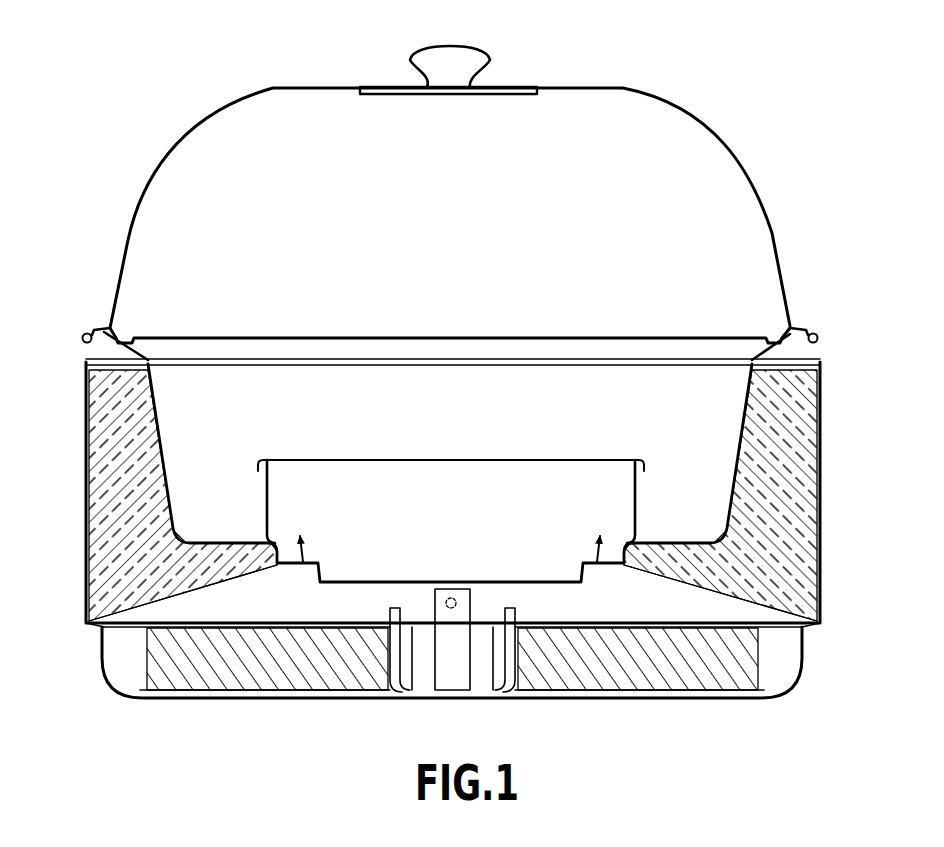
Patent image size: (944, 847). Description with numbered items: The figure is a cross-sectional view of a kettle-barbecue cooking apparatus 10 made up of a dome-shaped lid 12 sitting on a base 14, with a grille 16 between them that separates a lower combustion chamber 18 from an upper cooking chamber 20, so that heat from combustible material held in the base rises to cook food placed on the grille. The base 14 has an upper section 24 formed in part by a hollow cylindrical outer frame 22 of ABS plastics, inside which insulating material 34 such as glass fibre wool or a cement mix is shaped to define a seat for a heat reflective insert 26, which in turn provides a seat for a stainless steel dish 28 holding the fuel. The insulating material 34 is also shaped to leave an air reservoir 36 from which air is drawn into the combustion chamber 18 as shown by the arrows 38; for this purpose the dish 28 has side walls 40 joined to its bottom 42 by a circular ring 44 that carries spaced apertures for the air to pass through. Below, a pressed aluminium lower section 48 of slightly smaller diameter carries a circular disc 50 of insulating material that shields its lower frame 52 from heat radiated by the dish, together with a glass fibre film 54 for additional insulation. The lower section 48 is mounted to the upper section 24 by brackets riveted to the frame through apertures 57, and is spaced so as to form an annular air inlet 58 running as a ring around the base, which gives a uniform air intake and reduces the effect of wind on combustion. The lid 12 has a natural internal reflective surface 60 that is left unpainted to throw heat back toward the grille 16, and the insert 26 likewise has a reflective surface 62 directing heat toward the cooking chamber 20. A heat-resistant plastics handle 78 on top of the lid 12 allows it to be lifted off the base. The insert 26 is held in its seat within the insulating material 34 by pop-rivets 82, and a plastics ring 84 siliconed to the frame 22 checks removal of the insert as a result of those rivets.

The cooking apparatus 10 is at (772, 146).
The lid 12 is at (708, 126).
The base 14 is at (152, 708).
The grille 16 is at (452, 334).
The combustion chamber 18 is at (450, 453).
The cooking chamber 20 is at (450, 210).
The frame 22 is at (86, 470).
The upper section 24 is at (64, 446).
The heat reflective insert 26 is at (168, 493).
The dish 28 is at (642, 491).
The insulating material 34 is at (102, 543).
The air reservoir 36 is at (453, 594).
The arrows 38 is at (288, 566).
The side walls 40 is at (272, 480).
The bottom 42 is at (365, 582).
The circular ring 44 is at (310, 566).
The lower section 48 is at (100, 680).
The circular disc 50 is at (238, 698).
The lower frame 52 is at (548, 698).
The glass fibre film 54 is at (335, 627).
The apertures 57 is at (468, 614).
The annular air inlet 58 is at (85, 641).
The internal reflective surface 60 is at (208, 133).
The reflective surface 62 is at (166, 425).
The handle 78 is at (448, 53).
The pop-rivets 82 is at (150, 368).
The plastics ring 84 is at (105, 340).